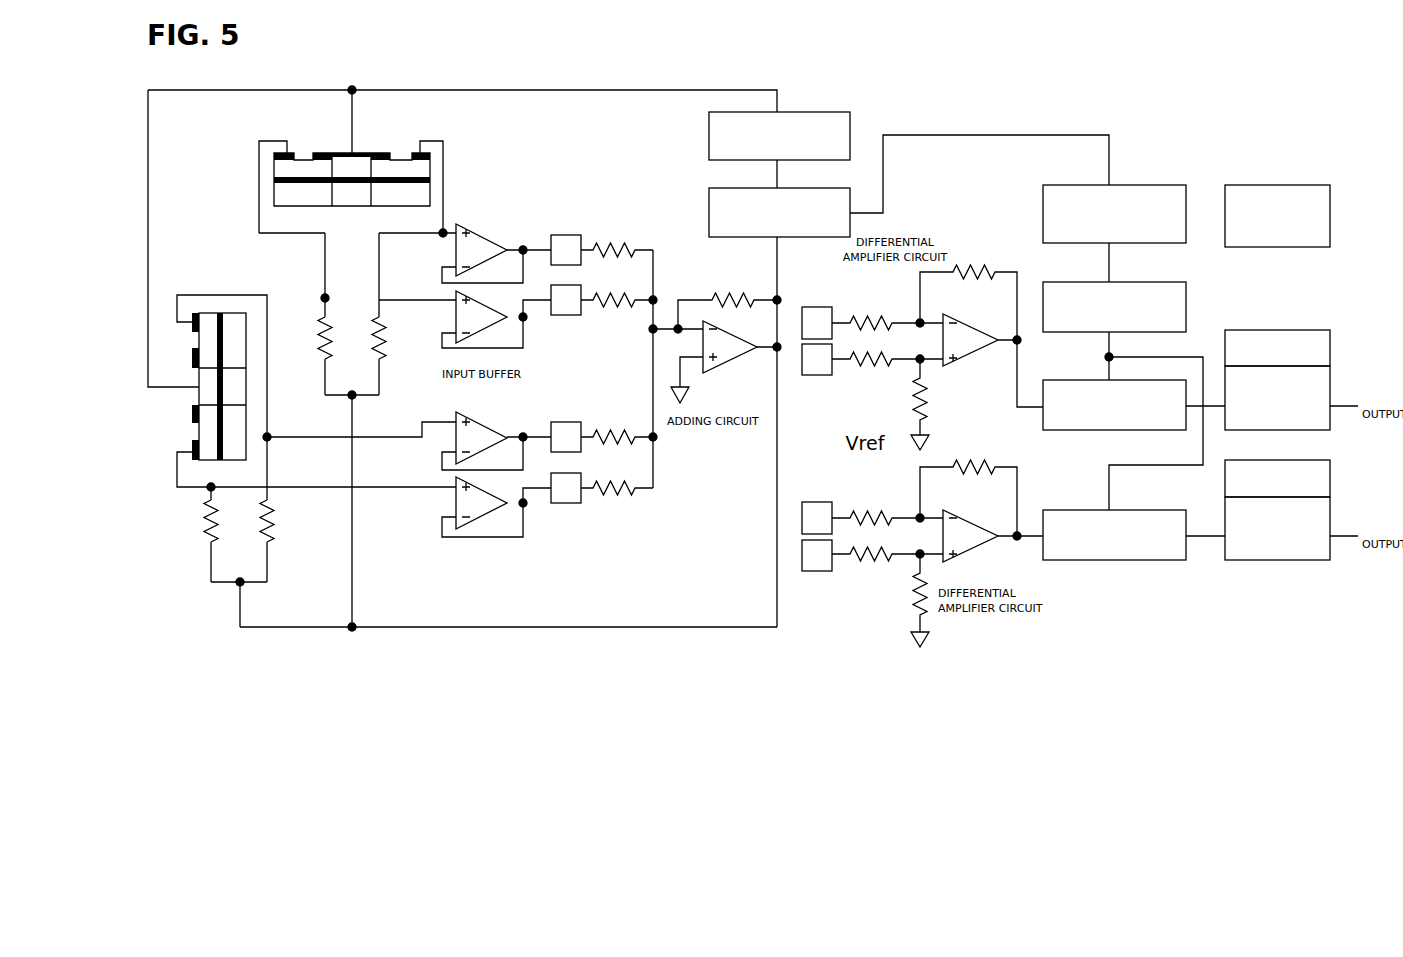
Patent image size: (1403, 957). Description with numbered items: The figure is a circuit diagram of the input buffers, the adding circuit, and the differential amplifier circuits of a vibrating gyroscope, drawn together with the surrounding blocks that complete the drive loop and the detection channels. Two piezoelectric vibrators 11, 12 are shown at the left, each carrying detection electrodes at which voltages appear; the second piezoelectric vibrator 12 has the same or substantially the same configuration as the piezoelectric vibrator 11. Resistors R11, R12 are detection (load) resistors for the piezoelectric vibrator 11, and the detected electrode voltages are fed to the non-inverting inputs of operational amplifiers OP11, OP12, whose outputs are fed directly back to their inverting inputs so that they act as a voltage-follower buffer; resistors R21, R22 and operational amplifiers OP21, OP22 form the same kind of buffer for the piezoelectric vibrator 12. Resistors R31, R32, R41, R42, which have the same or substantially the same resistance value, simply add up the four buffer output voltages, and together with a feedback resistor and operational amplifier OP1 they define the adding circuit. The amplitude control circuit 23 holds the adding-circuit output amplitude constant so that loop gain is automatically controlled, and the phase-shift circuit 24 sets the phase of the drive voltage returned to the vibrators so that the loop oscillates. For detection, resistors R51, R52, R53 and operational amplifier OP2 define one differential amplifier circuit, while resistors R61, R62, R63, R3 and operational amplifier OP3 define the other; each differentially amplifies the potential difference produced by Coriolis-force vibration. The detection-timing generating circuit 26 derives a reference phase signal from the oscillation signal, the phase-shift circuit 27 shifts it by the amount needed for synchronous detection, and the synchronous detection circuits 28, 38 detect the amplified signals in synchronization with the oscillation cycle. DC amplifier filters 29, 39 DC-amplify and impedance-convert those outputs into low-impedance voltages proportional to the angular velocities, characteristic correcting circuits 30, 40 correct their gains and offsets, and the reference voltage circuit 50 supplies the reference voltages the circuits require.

The piezoelectric vibrator 11 is at (246, 134).
The piezoelectric vibrator 12 is at (157, 307).
The amplitude control circuit 23 is at (850, 188).
The phase-shift circuit 24 is at (850, 112).
The detection-timing generating circuit 26 is at (1186, 185).
The phase-shift circuit 27 is at (1186, 282).
The synchronous detection circuit 28 is at (1186, 380).
The DC amplifier filter 29 is at (1330, 385).
The characteristic correcting circuit 30 is at (1330, 330).
The synchronous detection circuit 38 is at (1186, 510).
The DC amplifier filter 39 is at (1330, 515).
The characteristic correcting circuit 40 is at (1330, 472).
The reference voltage circuit 50 is at (1330, 185).
The operational amplifier OP1 is at (724, 362).
The operational amplifier OP2 is at (993, 360).
The operational amplifier OP3 is at (993, 543).
The operational amplifier OP11 is at (495, 326).
The operational amplifier OP12 is at (495, 248).
The operational amplifier OP21 is at (495, 514).
The operational amplifier OP22 is at (496, 435).
The resistor R3 is at (968, 498).
The resistor R11 is at (305, 314).
The resistor R12 is at (395, 314).
The resistor R21 is at (189, 534).
The resistor R22 is at (287, 534).
The resistor R31 is at (617, 237).
The resistor R32 is at (617, 315).
The resistor R41 is at (617, 425).
The resistor R42 is at (617, 503).
The resistor R51 is at (887, 309).
The resistor R52 is at (887, 373).
The resistor R53 is at (943, 404).
The resistor R61 is at (887, 503).
The resistor R62 is at (887, 567).
The resistor R63 is at (899, 600).